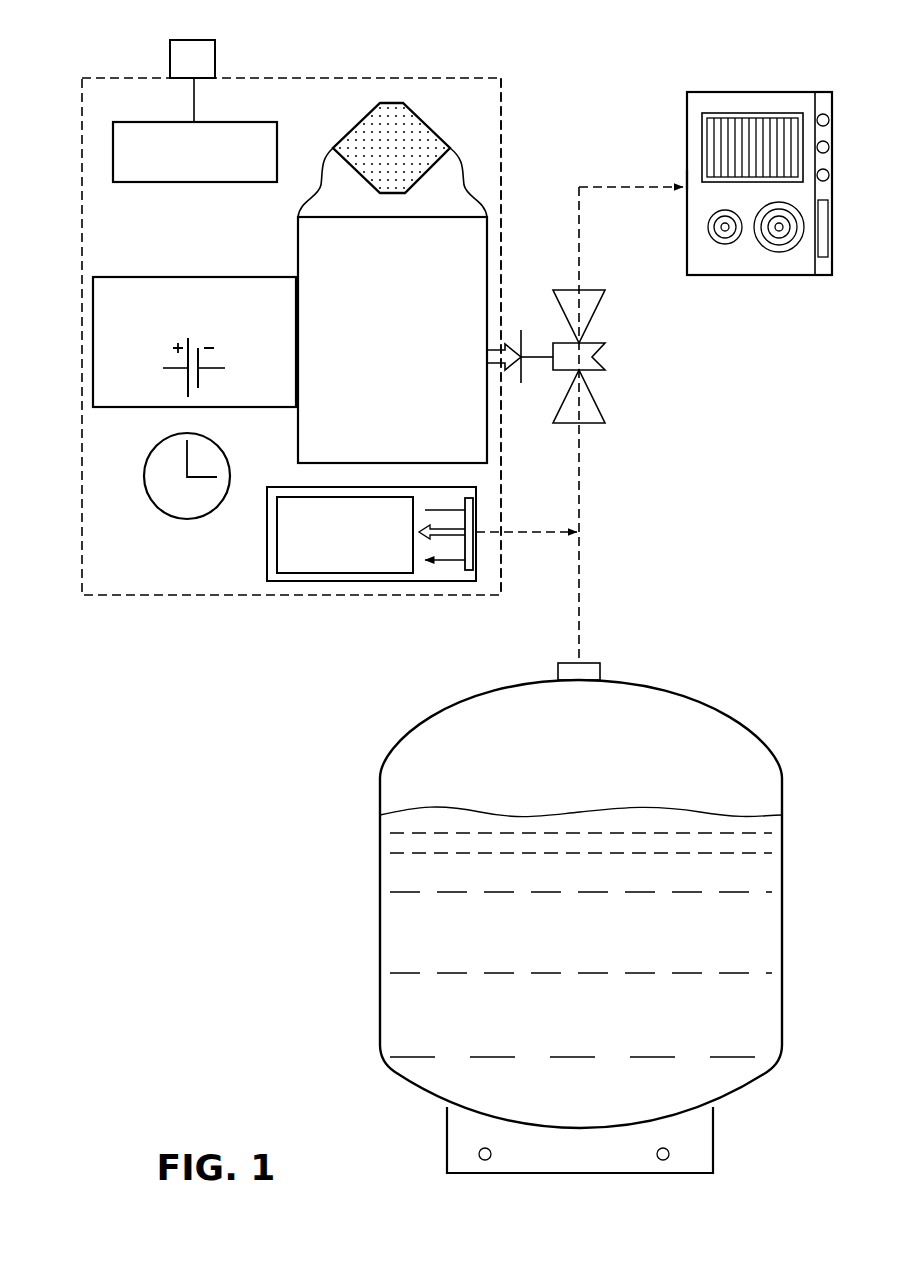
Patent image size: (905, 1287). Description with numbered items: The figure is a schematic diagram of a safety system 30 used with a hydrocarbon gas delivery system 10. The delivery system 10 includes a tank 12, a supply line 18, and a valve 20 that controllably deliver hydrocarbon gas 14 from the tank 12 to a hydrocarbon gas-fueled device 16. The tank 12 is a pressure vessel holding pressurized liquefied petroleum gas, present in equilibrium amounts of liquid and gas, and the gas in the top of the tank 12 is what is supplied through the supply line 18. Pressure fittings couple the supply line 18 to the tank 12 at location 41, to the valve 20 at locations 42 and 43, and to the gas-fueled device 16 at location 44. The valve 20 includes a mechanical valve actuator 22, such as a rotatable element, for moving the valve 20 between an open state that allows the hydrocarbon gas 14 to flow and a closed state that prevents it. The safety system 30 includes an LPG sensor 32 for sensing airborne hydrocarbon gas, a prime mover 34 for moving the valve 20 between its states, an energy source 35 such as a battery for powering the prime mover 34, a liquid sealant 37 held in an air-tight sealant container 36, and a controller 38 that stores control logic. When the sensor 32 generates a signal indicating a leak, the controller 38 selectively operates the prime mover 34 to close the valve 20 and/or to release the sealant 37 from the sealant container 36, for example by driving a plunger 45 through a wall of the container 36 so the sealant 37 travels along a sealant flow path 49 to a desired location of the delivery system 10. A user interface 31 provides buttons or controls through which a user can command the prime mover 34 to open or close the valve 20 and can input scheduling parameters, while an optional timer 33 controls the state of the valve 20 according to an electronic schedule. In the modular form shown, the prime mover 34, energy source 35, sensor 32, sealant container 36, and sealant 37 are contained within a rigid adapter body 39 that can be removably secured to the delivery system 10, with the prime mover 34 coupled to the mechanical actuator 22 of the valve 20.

The hydrocarbon gas delivery system 10 is at (158, 965).
The tank 12 is at (782, 930).
The hydrocarbon gas 14 is at (816, 869).
The hydrocarbon gas-fueled device 16 is at (758, 92).
The supply line 18 is at (578, 194).
The valve 20 is at (592, 396).
The mechanical valve actuator 22 is at (537, 352).
The safety system 30 is at (306, 66).
The user interface 31 is at (216, 53).
The LPG sensor 32 is at (409, 107).
The timer 33 is at (145, 473).
The prime mover 34 is at (488, 224).
The energy source 35 is at (93, 343).
The sealant container 36 is at (267, 550).
The liquid sealant 37 is at (330, 577).
The controller 38 is at (113, 160).
The rigid adapter body 39 is at (501, 140).
The tank coupling location 41 is at (588, 652).
The valve coupling location 42 is at (583, 432).
The valve coupling location 43 is at (573, 286).
The device coupling location 44 is at (681, 178).
The plunger 45 is at (473, 513).
The sealant flow path 49 is at (540, 534).